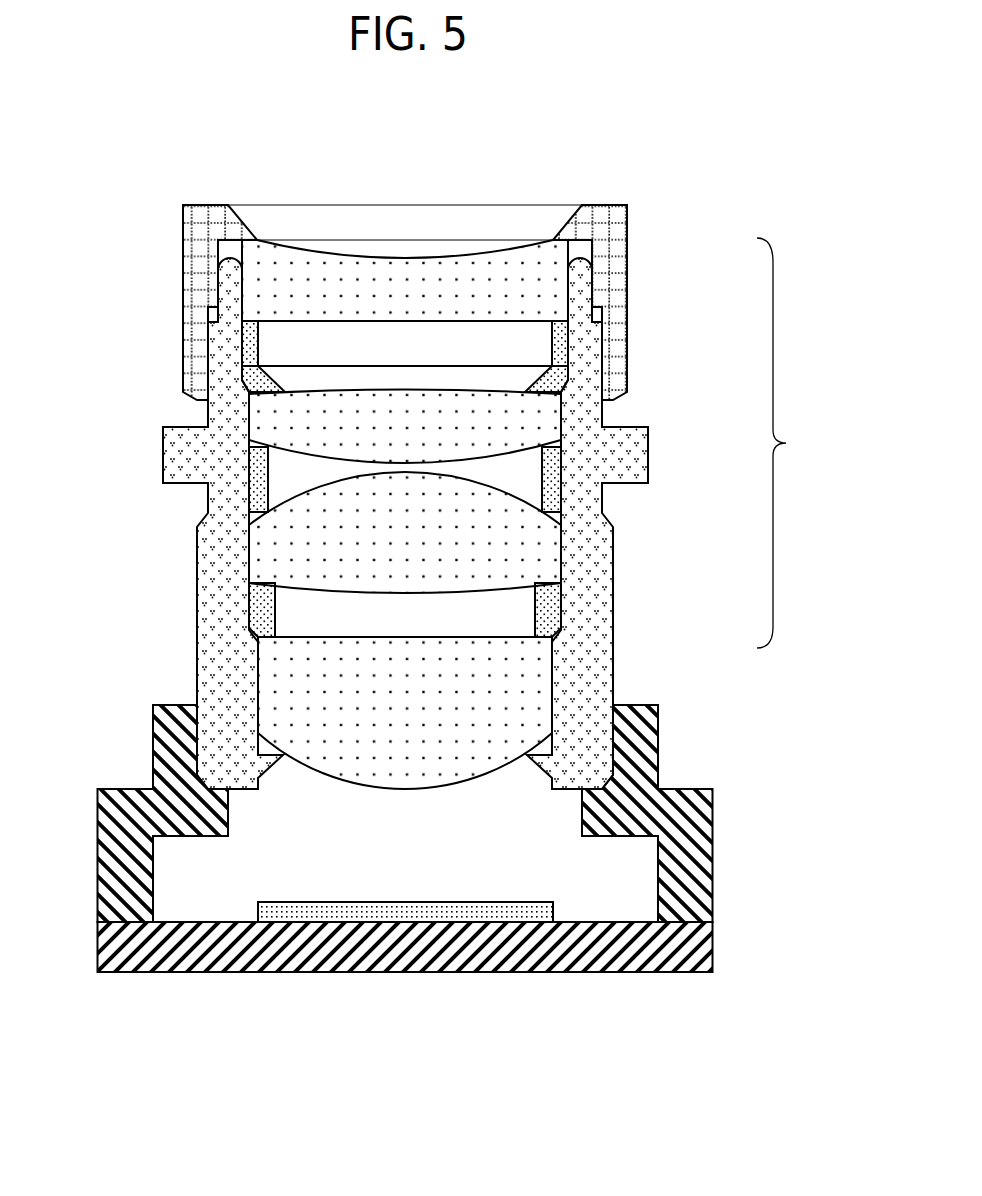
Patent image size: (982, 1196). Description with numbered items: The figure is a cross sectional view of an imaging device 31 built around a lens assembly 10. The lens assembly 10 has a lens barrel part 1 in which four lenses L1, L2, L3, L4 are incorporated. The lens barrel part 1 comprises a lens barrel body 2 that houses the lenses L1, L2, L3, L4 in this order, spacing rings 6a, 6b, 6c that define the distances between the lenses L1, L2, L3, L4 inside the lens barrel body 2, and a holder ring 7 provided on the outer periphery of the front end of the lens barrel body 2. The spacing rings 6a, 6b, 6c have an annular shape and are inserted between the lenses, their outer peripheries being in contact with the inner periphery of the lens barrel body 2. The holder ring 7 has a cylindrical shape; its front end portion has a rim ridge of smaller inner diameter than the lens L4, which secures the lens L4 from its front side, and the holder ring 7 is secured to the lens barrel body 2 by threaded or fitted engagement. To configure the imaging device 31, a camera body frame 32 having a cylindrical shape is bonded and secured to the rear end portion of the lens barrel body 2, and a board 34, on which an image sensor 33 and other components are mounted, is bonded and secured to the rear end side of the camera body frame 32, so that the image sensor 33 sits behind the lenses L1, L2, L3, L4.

The lens barrel part 1 is at (791, 443).
The lens barrel body 2 is at (648, 457).
The spacing ring 6a is at (560, 615).
The spacing ring 6b is at (558, 488).
The spacing ring 6c is at (572, 355).
The holder ring 7 is at (627, 268).
The lens assembly 10 is at (182, 230).
The imaging device 31 is at (678, 205).
The camera body frame 32 is at (712, 843).
The image sensor 33 is at (396, 925).
The board 34 is at (613, 973).
The lens L1 is at (258, 678).
The lens L2 is at (249, 553).
The lens L3 is at (249, 415).
The lens L4 is at (242, 292).